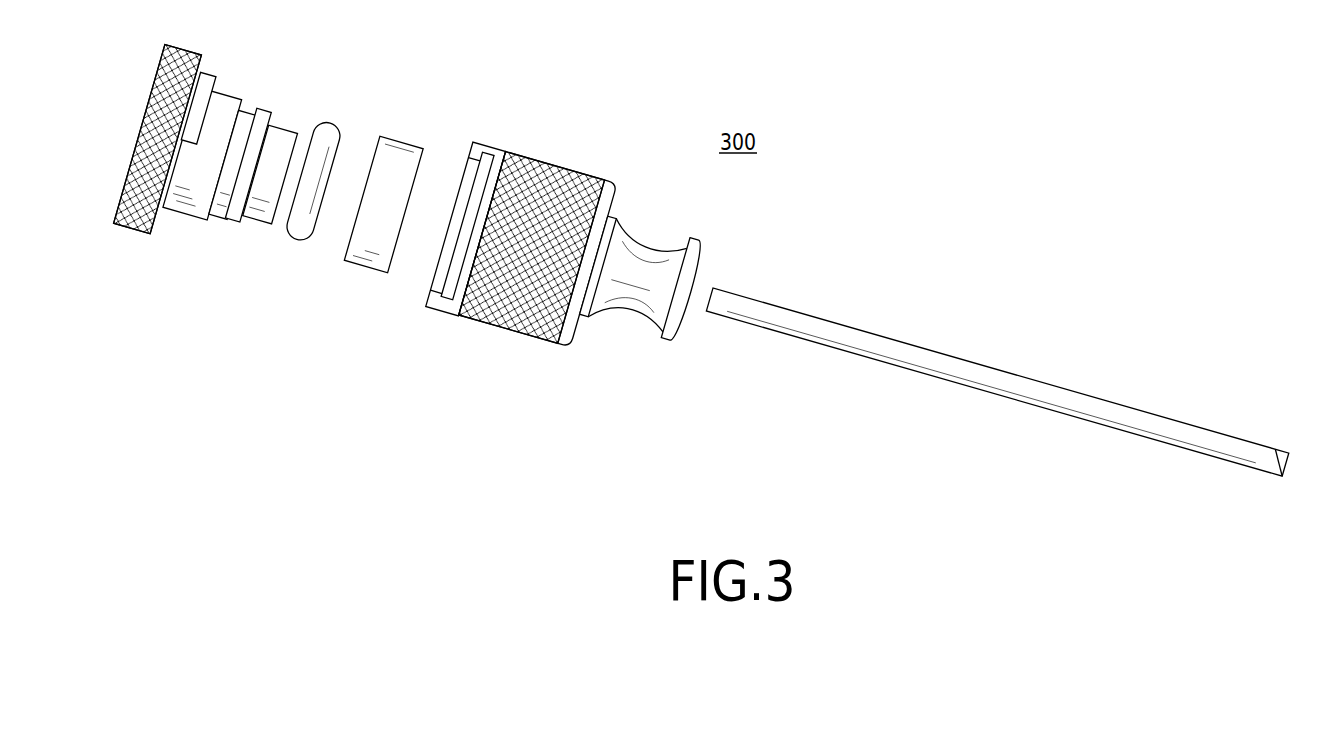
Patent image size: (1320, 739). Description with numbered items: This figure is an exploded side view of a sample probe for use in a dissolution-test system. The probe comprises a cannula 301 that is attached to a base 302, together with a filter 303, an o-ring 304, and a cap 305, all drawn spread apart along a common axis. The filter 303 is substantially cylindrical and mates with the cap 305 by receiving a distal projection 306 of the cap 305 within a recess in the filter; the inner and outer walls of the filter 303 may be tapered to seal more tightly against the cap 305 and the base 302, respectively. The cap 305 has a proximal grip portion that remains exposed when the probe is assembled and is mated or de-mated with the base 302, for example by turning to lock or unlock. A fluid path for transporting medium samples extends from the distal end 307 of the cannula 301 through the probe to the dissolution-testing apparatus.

The cannula 301 is at (883, 348).
The base 302 is at (518, 312).
The filter 303 is at (367, 253).
The o-ring 304 is at (297, 236).
The cap 305 is at (185, 193).
The distal projection 306 is at (280, 137).
The distal end 307 is at (1267, 422).